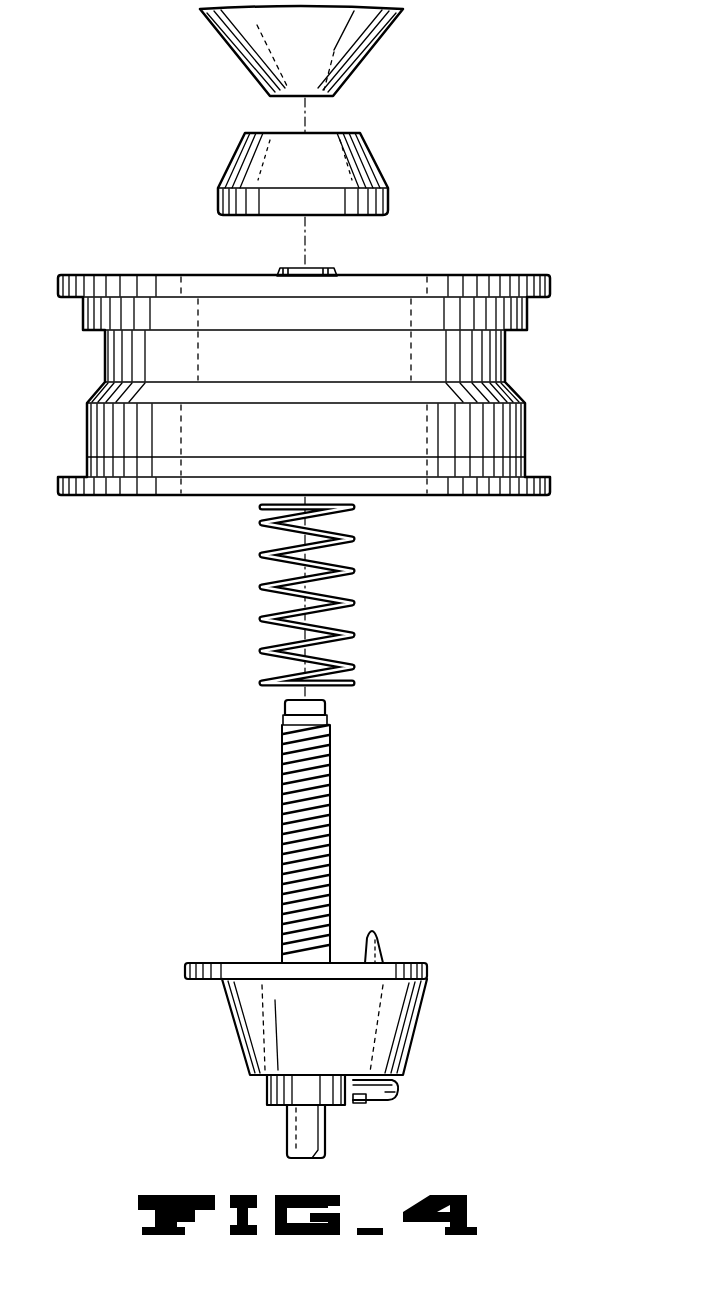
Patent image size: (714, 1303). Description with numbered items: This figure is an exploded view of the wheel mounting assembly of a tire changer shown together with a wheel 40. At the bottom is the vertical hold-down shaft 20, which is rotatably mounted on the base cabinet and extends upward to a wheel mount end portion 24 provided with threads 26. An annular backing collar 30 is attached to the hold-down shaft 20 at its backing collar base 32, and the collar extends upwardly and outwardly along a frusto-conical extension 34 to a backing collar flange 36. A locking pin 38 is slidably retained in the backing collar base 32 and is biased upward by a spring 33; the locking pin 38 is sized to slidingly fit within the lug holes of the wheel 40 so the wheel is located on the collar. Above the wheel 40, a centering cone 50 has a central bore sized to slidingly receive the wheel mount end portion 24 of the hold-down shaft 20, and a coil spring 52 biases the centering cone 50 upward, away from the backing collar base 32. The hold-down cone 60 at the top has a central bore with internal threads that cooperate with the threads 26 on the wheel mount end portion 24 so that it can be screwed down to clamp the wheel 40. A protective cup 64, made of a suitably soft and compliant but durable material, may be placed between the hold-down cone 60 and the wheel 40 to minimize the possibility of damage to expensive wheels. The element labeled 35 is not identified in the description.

The hold-down shaft 20 is at (287, 1136).
The wheel mount end portion 24 is at (300, 831).
The threads 26 is at (330, 790).
The backing collar 30 is at (320, 1053).
The backing collar base 32 is at (262, 1080).
The spring 33 is at (400, 1070).
The frusto-conical extension 34 is at (277, 1043).
The clip tab 35 is at (360, 1094).
The backing collar flange 36 is at (185, 972).
The locking pin 38 is at (378, 940).
The wheel 40 is at (425, 397).
The centering cone 50 is at (323, 268).
The coil spring 52 is at (343, 588).
The hold-down cone 60 is at (352, 45).
The protective cup 64 is at (340, 172).